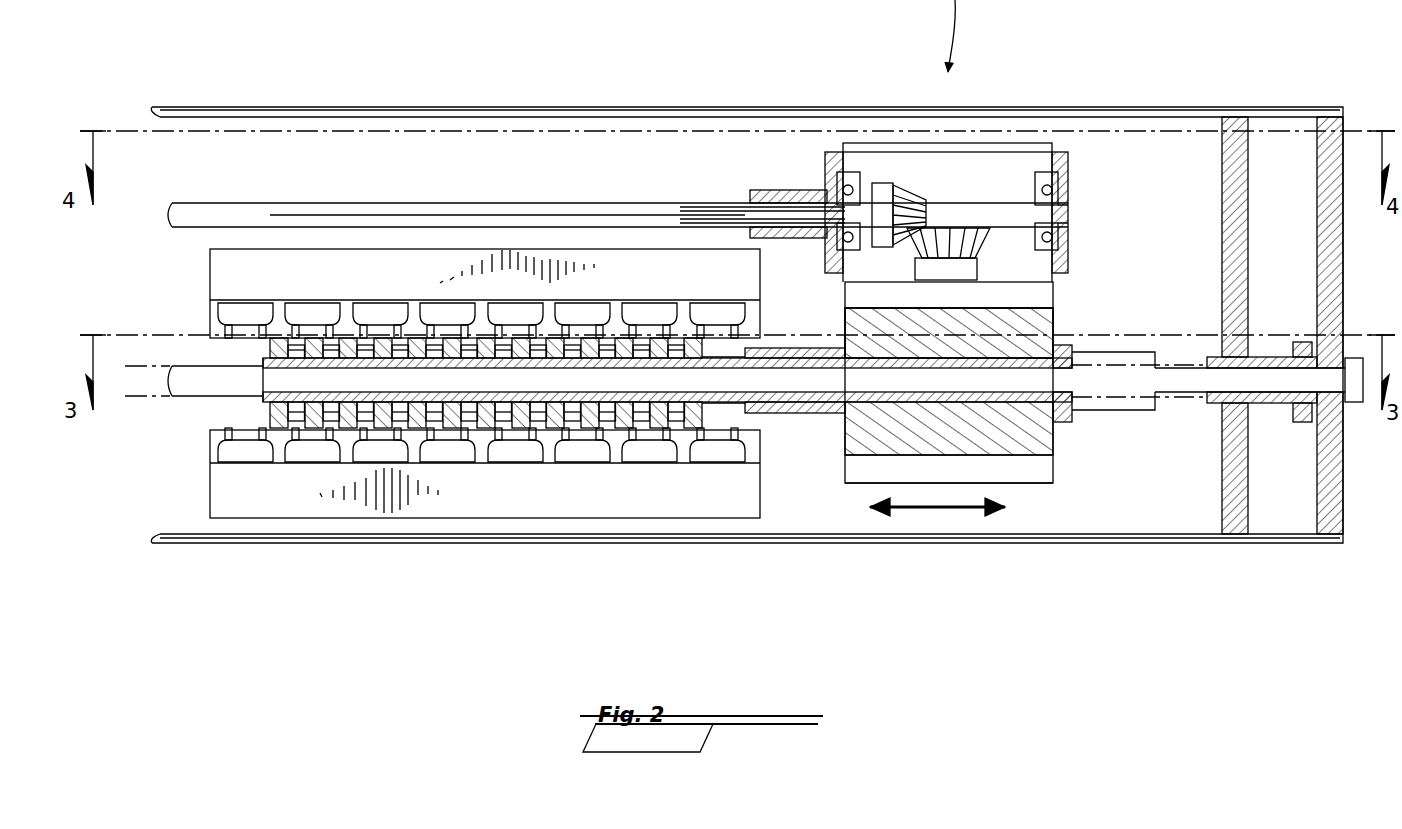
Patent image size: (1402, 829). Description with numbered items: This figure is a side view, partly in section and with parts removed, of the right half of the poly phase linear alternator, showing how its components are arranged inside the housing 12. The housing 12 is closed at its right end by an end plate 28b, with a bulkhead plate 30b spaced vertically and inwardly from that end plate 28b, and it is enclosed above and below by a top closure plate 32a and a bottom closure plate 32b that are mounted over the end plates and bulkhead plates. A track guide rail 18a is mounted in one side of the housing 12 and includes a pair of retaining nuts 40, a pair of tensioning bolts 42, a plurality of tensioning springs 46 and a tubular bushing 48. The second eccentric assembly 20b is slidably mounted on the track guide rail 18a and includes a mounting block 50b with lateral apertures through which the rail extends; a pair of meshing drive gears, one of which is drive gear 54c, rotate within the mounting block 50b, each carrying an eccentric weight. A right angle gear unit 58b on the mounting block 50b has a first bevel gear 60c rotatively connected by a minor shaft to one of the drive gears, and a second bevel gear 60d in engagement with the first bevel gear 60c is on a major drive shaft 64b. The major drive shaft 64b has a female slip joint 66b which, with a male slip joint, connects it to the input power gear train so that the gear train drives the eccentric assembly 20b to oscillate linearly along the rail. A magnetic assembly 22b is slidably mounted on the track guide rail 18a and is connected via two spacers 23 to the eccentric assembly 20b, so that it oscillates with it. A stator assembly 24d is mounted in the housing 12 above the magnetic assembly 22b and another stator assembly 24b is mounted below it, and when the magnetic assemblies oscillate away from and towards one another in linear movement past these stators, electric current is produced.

The housing 12 is at (1105, 106).
The top closure plate 32a is at (478, 105).
The bottom closure plate 32b is at (603, 545).
The second bevel gear 60d is at (905, 185).
The first bevel gear 60c is at (960, 240).
The female slip joint 66b is at (752, 188).
The major drive shaft 64b is at (428, 215).
The bulkhead plate 30b is at (1230, 190).
The end plate 28b is at (1340, 278).
The stator assembly 24d is at (206, 286).
The stator assembly 24b is at (206, 504).
The spacer 23 is at (807, 353).
The right angle gear unit 58b is at (1075, 208).
The tubular bushing 48 is at (1057, 318).
The tensioning springs 46 is at (1193, 347).
The magnetic assembly 22b is at (258, 352).
The track guide rail 18a is at (808, 395).
The second eccentric assembly 20b is at (1058, 442).
The mounting block 50b is at (1025, 484).
The drive gear 54c is at (1110, 410).
The tensioning bolts 42 is at (1267, 403).
The retaining nuts 40 is at (1350, 403).